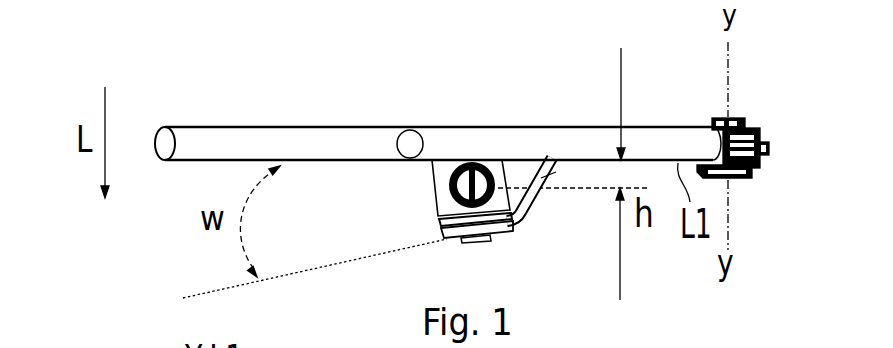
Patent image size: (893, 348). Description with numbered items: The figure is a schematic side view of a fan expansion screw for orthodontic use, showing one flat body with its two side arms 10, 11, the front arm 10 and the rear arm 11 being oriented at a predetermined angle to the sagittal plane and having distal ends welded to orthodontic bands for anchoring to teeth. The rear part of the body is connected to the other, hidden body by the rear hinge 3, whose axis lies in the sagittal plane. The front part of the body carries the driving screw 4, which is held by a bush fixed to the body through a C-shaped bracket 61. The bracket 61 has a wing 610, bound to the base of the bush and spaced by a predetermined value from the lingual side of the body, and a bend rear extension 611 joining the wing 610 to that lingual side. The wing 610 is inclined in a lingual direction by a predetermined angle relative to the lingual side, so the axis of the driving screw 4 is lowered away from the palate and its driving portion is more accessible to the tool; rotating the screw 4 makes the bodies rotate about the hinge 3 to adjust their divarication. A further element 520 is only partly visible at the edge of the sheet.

The side arm 10 is at (230, 138).
The side arm 11 is at (667, 142).
The rear hinge 3 is at (740, 118).
The driving screw 4 is at (447, 189).
The C-shaped bracket 61 is at (510, 246).
The wing 610 is at (467, 259).
The bend rear extension 611 is at (533, 210).
The element (cut off) 520 is at (377, 341).